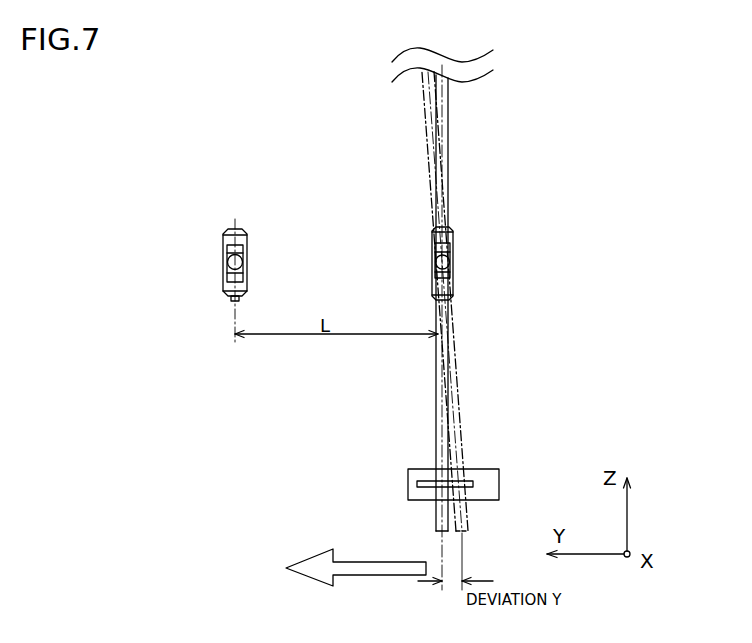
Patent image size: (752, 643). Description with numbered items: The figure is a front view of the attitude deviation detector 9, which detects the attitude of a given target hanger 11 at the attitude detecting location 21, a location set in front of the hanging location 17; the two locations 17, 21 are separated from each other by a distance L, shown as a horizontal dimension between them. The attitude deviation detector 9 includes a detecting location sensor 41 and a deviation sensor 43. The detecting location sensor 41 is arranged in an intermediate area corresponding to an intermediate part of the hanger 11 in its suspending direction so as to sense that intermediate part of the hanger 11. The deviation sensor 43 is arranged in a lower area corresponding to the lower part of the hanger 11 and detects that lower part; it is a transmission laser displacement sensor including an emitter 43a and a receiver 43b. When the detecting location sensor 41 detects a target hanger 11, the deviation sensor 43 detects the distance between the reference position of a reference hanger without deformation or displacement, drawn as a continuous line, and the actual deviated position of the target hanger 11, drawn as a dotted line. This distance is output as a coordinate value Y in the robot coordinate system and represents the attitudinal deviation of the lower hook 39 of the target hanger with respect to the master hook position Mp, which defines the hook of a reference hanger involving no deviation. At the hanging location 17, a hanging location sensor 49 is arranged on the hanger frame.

The attitude deviation detector 9 is at (410, 450).
The hanger 11 is at (425, 177).
The hanging location 17 is at (235, 320).
The attitude detecting location 21 is at (438, 313).
The lower hook 39 is at (438, 534).
The detecting location sensor 41 is at (454, 240).
The deviation sensor 43 is at (410, 481).
The emitter 43a is at (360, 469).
The receiver 43b is at (417, 483).
The hanging location sensor 49 is at (223, 263).
The master hook position Mp is at (437, 528).